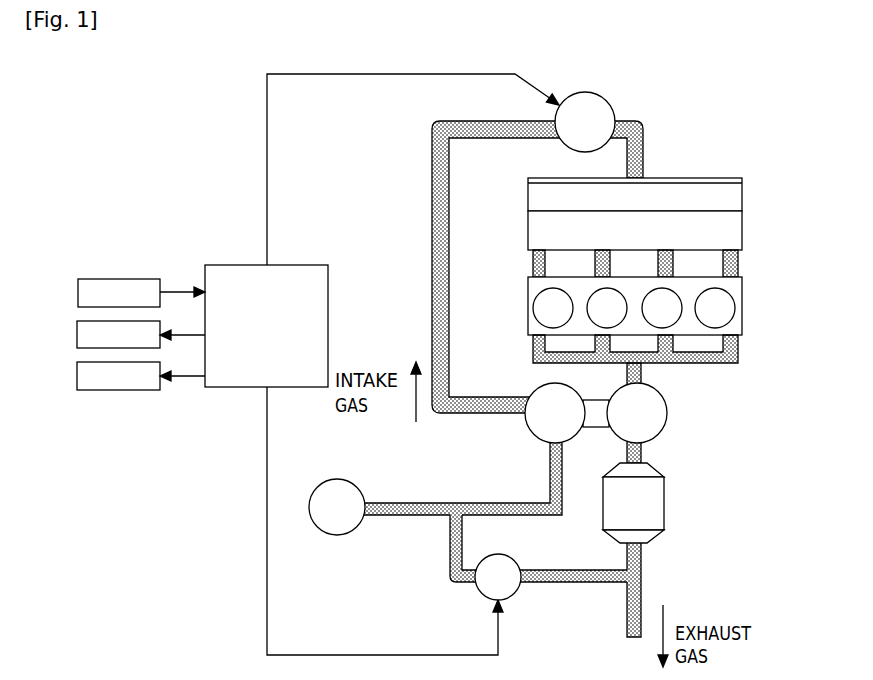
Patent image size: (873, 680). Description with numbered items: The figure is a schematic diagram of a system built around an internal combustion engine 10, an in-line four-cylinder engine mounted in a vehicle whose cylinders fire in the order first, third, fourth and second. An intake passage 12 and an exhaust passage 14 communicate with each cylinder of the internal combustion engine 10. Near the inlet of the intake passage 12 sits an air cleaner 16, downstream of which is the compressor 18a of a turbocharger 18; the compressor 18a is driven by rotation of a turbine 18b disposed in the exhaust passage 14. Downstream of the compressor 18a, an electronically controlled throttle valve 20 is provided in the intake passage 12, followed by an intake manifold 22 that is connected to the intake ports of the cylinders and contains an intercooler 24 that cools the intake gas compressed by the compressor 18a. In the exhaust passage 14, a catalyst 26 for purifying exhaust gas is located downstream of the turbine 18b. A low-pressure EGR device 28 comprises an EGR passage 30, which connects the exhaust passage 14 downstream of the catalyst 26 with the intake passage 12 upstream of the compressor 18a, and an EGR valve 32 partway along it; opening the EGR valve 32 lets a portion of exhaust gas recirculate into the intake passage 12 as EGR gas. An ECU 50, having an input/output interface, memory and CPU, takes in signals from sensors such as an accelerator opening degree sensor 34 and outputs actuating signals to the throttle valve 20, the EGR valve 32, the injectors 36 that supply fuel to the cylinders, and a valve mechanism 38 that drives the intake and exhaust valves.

The internal combustion engine 10 is at (661, 289).
The intake passage 12 is at (432, 141).
The exhaust passage 14 is at (642, 568).
The air cleaner 16 is at (338, 478).
The turbocharger 18 is at (607, 444).
The compressor 18a is at (546, 443).
The turbine 18b is at (660, 442).
The throttle valve 20 is at (586, 93).
The intake manifold 22 is at (742, 250).
The intercooler 24 is at (695, 182).
The catalyst 26 is at (664, 512).
The low-pressure EGR device 28 is at (494, 567).
The EGR passage 30 is at (466, 537).
The EGR valve 32 is at (476, 593).
The accelerator opening degree sensor 34 is at (78, 279).
The injectors 36 is at (77, 321).
The valve mechanism 38 is at (77, 362).
The ECU 50 is at (205, 265).